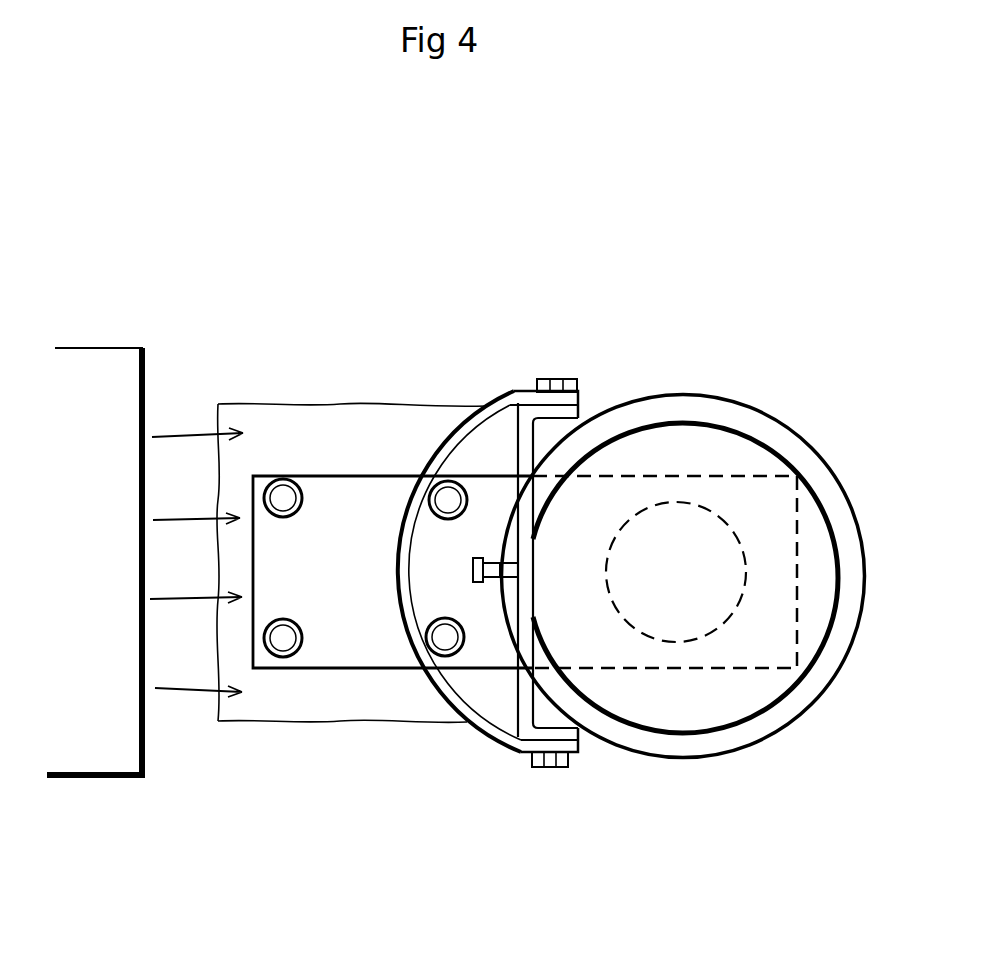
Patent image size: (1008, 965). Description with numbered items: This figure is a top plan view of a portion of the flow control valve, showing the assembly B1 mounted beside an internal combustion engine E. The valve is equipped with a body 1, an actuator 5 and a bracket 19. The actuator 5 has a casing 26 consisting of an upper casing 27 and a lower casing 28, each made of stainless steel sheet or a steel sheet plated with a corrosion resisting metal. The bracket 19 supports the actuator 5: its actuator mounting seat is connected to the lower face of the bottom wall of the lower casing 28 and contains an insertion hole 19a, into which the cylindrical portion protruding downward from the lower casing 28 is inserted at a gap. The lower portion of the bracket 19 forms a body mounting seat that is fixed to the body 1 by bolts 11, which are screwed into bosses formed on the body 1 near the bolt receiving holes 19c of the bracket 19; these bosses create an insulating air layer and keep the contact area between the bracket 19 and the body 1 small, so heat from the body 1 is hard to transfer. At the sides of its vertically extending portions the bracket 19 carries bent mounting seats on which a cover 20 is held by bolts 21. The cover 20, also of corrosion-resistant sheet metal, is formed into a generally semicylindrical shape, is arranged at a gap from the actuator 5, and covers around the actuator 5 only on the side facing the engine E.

The bracket assembly B1 is at (571, 231).
The internal combustion engine E is at (116, 362).
The body 1 is at (310, 420).
The actuator 5 is at (737, 378).
The bolts 11 is at (412, 497).
The bracket 19 is at (355, 650).
The insertion hole 19a is at (702, 632).
The bolt receiving holes 19c is at (579, 417).
The cover 20 is at (458, 440).
The bolts 21 is at (553, 378).
The casing 26 is at (710, 512).
The upper casing 27 is at (770, 475).
The lower casing 28 is at (845, 520).